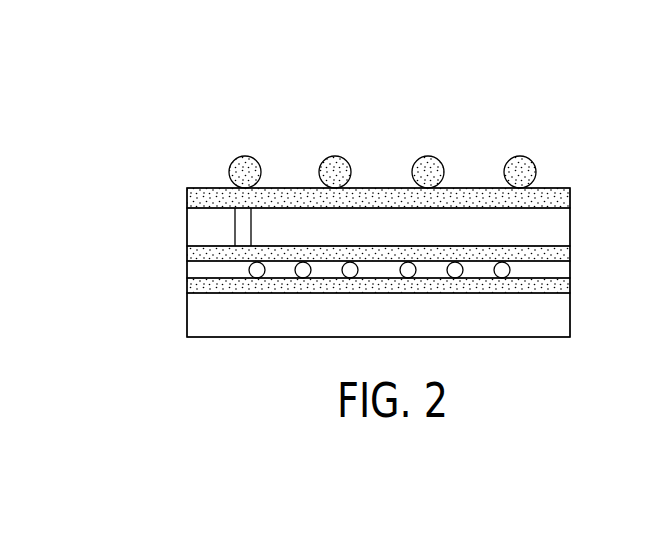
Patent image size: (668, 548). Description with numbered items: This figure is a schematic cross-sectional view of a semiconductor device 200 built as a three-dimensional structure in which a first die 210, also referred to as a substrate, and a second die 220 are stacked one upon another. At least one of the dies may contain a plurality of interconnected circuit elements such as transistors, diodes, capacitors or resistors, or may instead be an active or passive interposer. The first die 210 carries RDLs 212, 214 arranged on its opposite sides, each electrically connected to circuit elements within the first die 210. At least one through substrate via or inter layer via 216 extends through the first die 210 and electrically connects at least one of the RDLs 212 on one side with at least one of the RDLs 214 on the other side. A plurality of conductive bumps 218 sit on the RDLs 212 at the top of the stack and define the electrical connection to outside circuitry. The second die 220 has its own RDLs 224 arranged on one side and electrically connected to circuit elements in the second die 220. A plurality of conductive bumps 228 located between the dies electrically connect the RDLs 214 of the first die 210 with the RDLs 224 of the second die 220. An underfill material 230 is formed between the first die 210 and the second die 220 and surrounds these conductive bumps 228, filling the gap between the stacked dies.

The semiconductor device 200 is at (116, 76).
The first die 210 is at (190, 230).
The RDLs 212 is at (186, 197).
The RDLs 214 is at (189, 255).
The through substrate via 216 is at (244, 226).
The conductive bumps 218 is at (239, 171).
The second die 220 is at (563, 318).
The RDLs 224 is at (563, 283).
The conductive bumps 228 is at (505, 267).
The underfill material 230 is at (198, 270).